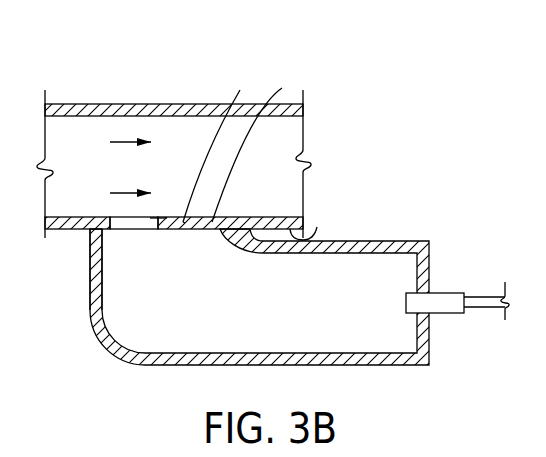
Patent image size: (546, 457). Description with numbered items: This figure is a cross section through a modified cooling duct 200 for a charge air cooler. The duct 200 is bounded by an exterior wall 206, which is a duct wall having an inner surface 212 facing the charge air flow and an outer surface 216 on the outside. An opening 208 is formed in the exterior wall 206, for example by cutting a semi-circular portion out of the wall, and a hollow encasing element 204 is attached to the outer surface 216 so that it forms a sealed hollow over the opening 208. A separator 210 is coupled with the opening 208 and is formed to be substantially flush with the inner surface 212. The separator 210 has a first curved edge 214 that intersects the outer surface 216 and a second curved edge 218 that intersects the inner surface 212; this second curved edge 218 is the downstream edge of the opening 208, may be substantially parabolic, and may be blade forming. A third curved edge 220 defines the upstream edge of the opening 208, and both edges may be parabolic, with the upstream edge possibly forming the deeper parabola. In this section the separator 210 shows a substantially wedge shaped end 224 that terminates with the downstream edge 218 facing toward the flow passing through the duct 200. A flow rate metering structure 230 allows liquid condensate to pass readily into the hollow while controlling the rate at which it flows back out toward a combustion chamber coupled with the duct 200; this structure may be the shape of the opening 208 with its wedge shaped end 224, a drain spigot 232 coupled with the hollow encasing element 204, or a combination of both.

The duct 200 is at (196, 162).
The hollow encasing element 204 is at (221, 289).
The exterior wall 206 is at (292, 103).
The opening 208 is at (127, 220).
The separator 210 is at (282, 88).
The inner surface 212 is at (212, 206).
The first curved edge 214 is at (185, 223).
The outer surface 216 is at (322, 227).
The second curved edge 218 is at (167, 218).
The third curved edge 220 is at (120, 229).
The wedge shaped end 224 is at (249, 78).
The flow rate metering structure 230 is at (460, 271).
The drain spigot 232 is at (455, 306).